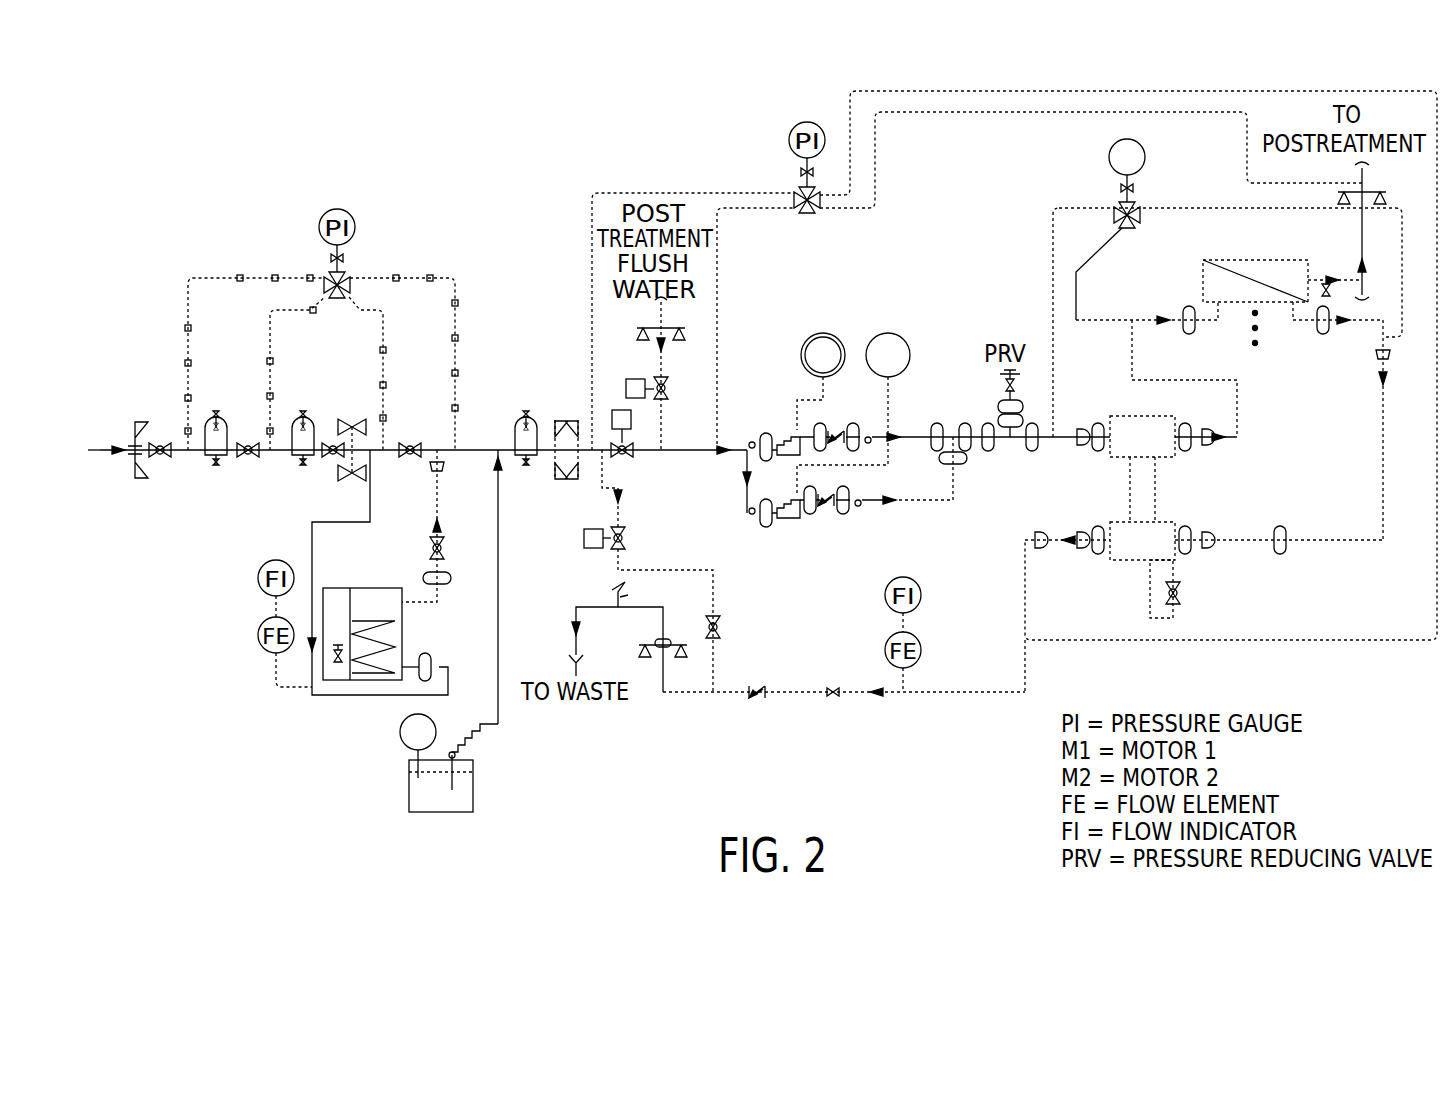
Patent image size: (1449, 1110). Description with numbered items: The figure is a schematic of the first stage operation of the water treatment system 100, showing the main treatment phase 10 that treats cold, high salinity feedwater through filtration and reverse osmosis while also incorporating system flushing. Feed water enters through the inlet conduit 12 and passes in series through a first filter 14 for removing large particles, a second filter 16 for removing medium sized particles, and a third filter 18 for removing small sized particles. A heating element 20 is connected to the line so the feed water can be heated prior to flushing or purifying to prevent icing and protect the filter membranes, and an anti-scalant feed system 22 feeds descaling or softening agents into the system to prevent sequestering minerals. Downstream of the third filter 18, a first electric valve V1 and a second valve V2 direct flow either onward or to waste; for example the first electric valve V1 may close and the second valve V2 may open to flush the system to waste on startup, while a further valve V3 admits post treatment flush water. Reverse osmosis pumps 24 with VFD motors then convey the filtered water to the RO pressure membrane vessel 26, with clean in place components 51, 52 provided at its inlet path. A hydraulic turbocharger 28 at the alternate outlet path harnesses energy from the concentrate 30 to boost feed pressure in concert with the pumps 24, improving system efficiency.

The main treatment phase 10 is at (243, 128).
The water treatment system 100 is at (323, 245).
The inlet conduit 12 is at (118, 452).
The first filter 14 is at (218, 456).
The second filter 16 is at (306, 456).
The third filter 18 is at (529, 456).
The heating element 20 is at (375, 588).
The anti-scalant feed system 22 is at (405, 786).
The reverse osmosis pumps 24 is at (805, 508).
The RO pressure membrane vessel 26 is at (1268, 320).
The hydraulic turbocharger 28 is at (1193, 480).
The concentrate 30 is at (1245, 542).
The CIP tank 51 is at (1192, 334).
The CIP component 52 is at (1326, 335).
The first electric valve V1 is at (620, 462).
The second valve V2 is at (622, 542).
The valve V3 is at (668, 388).